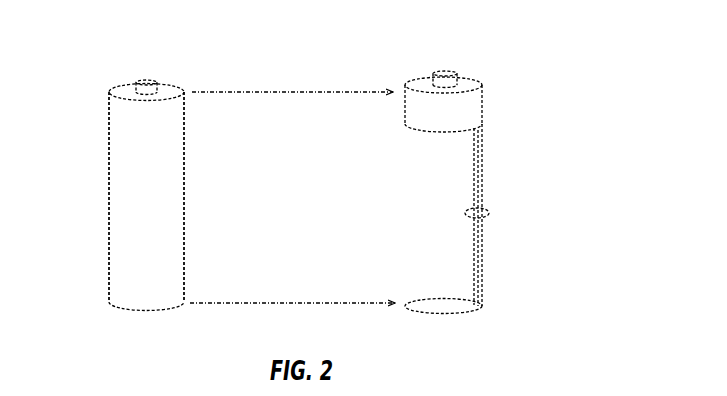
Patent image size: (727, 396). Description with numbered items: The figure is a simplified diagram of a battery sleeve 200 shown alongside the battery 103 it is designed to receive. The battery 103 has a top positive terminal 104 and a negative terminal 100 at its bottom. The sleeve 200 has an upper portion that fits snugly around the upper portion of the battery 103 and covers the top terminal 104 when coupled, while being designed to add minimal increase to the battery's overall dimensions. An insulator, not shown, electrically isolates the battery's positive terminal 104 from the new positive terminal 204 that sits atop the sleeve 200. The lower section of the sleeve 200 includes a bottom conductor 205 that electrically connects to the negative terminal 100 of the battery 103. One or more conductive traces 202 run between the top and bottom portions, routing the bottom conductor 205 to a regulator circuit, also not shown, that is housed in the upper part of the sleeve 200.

The negative terminal 100 is at (142, 312).
The battery 103 is at (109, 197).
The top terminal 104 is at (141, 81).
The battery sleeve 200 is at (510, 189).
The conductive traces 202 is at (488, 212).
The new positive terminal 204 is at (443, 73).
The bottom conductor 205 is at (445, 313).